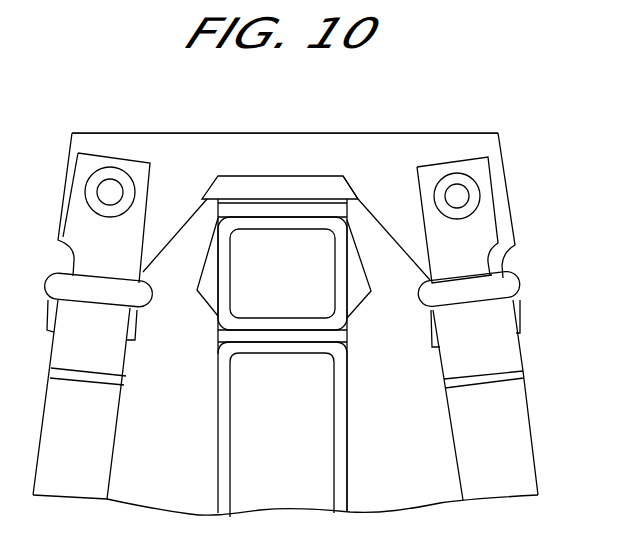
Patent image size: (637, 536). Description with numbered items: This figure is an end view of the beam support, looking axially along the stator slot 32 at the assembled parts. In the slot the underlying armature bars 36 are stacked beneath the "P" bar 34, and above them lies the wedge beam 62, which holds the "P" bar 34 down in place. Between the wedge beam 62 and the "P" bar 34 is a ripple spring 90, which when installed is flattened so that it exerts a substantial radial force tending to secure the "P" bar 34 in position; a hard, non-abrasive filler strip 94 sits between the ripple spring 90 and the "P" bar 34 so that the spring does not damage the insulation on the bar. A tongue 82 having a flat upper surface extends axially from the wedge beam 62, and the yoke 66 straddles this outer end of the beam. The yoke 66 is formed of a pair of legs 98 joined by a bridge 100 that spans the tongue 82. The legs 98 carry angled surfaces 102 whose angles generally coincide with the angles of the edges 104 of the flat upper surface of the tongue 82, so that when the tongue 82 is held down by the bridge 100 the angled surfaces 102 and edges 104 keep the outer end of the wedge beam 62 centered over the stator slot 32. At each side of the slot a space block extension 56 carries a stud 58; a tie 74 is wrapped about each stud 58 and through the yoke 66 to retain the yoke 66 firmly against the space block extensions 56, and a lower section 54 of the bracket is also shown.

The stator slot 32 is at (218, 423).
The "P" bar 34 is at (371, 291).
The armature bars 36 is at (338, 434).
The lower strip section 54 is at (508, 426).
The space block extension 56 is at (502, 353).
The stud 58 is at (456, 182).
The wedge beam 62 is at (243, 185).
The yoke 66 is at (401, 150).
The tie 74 is at (507, 286).
The tongue 82 is at (278, 186).
The ripple spring 90 is at (344, 184).
The filler strip 94 is at (228, 210).
The legs 98 is at (522, 318).
The bridge 100 is at (325, 142).
The angled surfaces 102 is at (213, 187).
The edges 104 is at (342, 181).